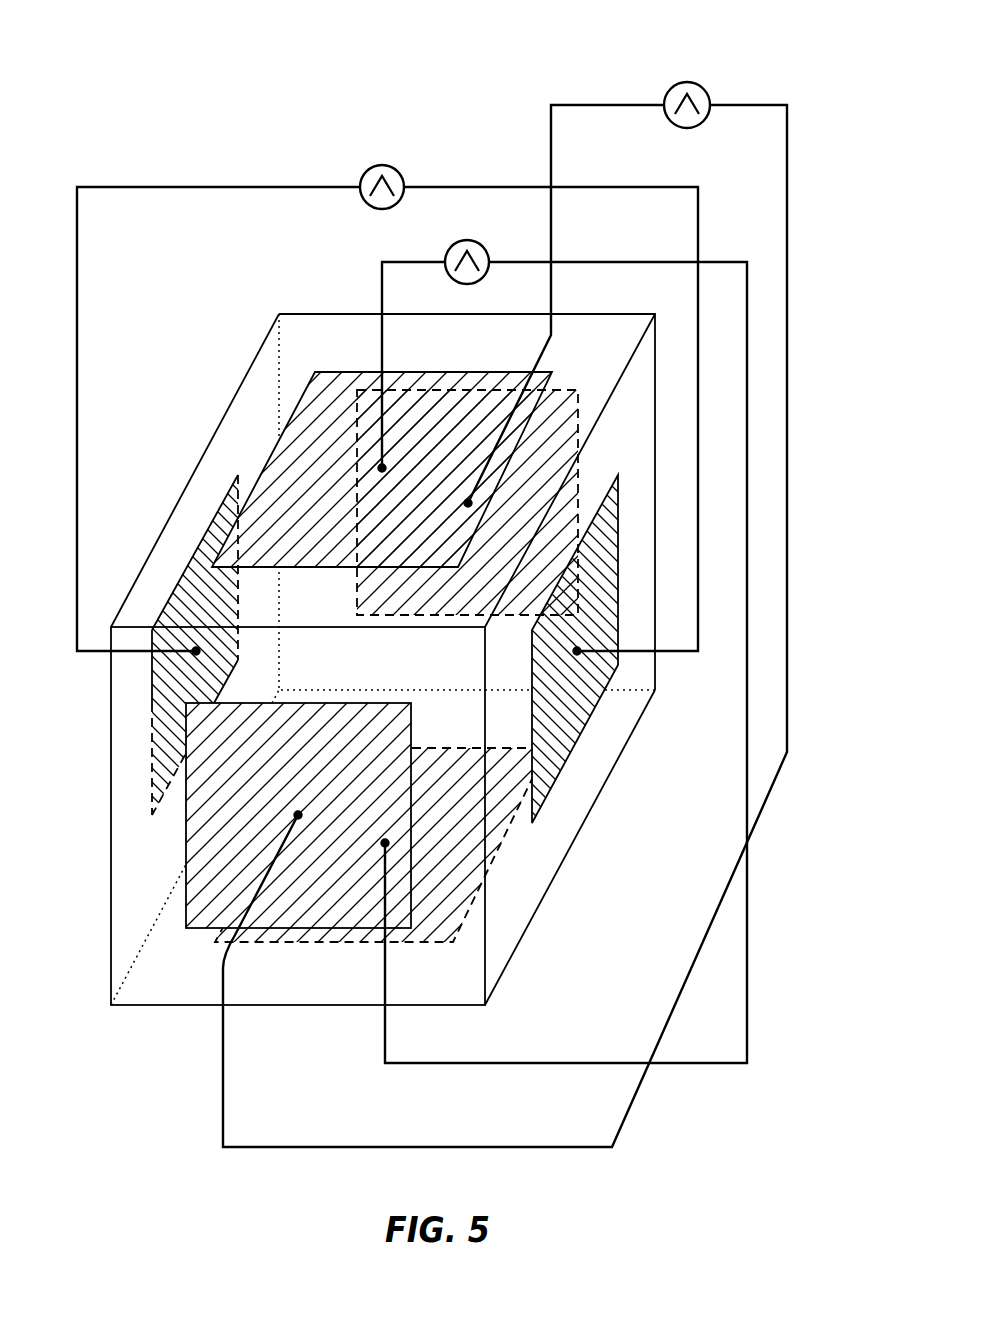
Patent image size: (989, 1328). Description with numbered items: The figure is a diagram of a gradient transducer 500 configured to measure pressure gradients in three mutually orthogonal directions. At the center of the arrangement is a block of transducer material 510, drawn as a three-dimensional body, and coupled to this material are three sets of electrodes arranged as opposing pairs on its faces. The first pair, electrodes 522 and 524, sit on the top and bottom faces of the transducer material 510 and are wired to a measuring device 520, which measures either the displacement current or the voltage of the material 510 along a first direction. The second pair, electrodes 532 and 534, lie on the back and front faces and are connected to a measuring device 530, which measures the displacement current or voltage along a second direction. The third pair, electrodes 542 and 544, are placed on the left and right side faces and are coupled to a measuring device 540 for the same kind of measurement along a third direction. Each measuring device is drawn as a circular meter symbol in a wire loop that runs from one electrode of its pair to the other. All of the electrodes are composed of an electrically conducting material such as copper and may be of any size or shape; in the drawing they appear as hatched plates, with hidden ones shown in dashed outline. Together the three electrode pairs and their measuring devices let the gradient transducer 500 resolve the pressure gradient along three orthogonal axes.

The gradient transducer 500 is at (133, 40).
The transducer material 510 is at (259, 353).
The measuring device 520 is at (481, 240).
The electrode 522 is at (288, 458).
The electrode 524 is at (457, 900).
The measuring device 530 is at (700, 83).
The electrode 532 is at (583, 445).
The electrode 534 is at (190, 872).
The measuring device 540 is at (392, 165).
The electrode 542 is at (162, 724).
The electrode 544 is at (583, 706).